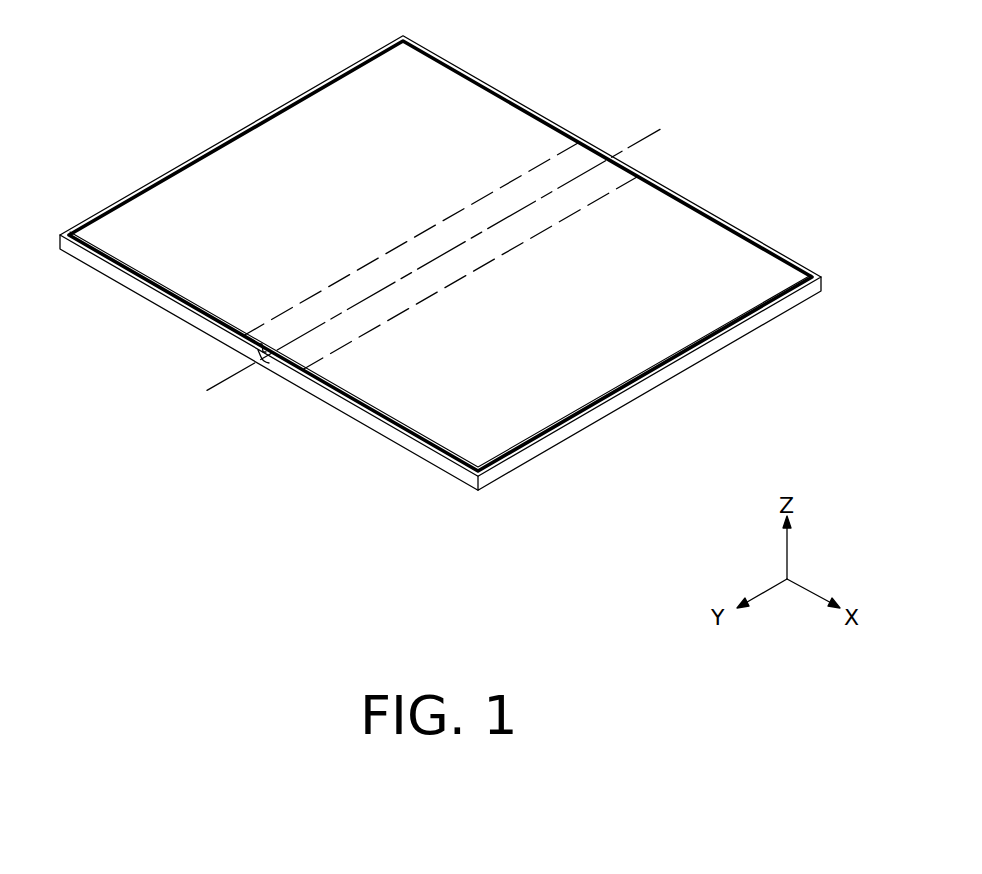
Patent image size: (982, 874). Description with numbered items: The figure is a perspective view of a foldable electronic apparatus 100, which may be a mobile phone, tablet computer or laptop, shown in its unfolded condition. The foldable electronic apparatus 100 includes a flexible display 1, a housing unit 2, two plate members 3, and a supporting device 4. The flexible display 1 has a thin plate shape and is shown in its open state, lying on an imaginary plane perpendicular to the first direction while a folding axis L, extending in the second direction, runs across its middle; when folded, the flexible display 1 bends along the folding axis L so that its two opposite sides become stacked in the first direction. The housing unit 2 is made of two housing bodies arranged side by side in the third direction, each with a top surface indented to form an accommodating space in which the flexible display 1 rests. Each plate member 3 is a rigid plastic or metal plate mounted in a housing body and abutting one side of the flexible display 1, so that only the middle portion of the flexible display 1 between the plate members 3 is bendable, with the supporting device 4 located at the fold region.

The foldable electronic apparatus 100 is at (105, 34).
The flexible display 1 is at (682, 226).
The housing unit 2 is at (667, 372).
The plate member 3 is at (178, 284).
The supporting device 4 is at (260, 356).
The folding axis L is at (444, 250).